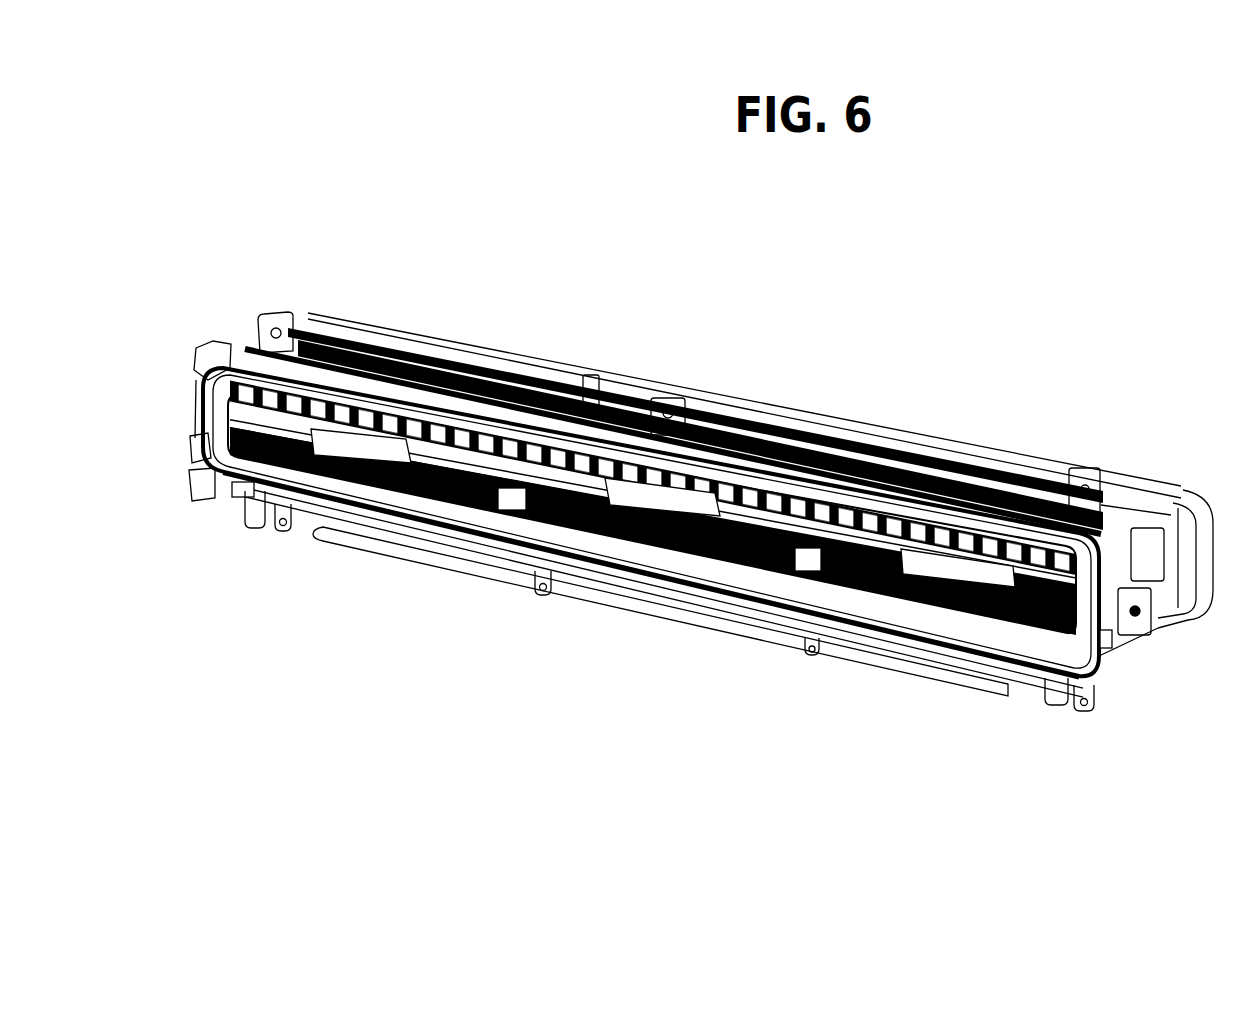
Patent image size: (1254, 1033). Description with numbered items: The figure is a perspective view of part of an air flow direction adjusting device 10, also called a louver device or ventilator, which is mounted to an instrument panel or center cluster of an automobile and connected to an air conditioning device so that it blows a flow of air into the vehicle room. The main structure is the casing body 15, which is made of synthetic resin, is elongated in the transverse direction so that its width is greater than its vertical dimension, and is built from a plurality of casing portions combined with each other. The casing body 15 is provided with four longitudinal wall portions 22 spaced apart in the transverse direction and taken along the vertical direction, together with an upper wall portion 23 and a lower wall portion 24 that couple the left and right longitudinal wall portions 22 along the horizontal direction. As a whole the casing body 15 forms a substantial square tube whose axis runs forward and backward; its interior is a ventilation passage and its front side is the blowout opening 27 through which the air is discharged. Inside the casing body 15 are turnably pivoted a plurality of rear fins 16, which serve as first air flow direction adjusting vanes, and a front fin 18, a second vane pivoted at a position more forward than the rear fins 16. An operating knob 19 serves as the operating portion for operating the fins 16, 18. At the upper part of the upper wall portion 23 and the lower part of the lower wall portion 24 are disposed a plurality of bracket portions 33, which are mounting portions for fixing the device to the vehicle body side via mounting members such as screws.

The air flow direction adjusting device 10 is at (788, 340).
The casing body 15 is at (958, 440).
The rear fins 16 is at (440, 470).
The front fin 18 is at (402, 493).
The operating knob 19 is at (335, 473).
The longitudinal wall portions 22 is at (232, 492).
The upper wall portion 23 is at (493, 388).
The lower wall portion 24 is at (480, 500).
The blowout opening 27 is at (873, 590).
The bracket portions 33 is at (268, 312).